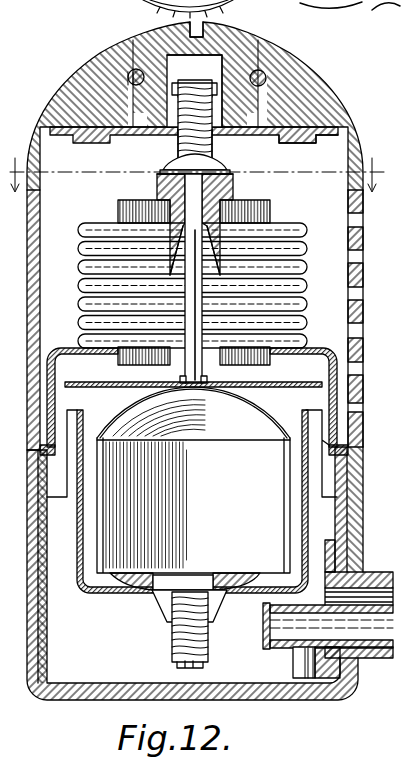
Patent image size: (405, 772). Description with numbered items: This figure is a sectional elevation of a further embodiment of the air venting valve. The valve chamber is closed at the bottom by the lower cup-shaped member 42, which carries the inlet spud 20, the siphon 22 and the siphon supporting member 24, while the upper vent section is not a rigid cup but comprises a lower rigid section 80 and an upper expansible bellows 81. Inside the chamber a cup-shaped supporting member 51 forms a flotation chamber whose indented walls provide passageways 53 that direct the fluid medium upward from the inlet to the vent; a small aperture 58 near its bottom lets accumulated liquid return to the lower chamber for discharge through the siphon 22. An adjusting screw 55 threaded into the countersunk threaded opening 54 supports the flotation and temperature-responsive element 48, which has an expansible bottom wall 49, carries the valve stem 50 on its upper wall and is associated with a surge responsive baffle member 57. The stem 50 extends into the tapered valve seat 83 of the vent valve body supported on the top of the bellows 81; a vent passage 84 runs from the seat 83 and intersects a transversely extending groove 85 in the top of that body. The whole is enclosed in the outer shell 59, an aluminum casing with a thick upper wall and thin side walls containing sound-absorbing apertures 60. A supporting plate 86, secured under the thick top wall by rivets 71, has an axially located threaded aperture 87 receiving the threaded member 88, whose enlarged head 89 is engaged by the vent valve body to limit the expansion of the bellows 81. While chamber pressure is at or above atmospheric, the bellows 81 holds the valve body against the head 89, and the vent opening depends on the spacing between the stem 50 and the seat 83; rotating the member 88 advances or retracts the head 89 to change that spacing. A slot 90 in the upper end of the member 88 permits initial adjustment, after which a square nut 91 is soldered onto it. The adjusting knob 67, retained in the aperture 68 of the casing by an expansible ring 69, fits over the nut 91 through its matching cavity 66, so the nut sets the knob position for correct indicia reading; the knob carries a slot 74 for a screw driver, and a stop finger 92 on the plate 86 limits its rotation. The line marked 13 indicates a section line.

The section line 13- 13 is at (196, 186).
The inlet spud 20 is at (374, 572).
The siphon 22 is at (381, 660).
The siphon supporting member 24 is at (296, 660).
The lower cup-shaped member 42 is at (353, 470).
The flotation and temperature-responsive element 48 is at (240, 400).
The expansible bottom wall 49 is at (152, 560).
The valve stem 50 is at (192, 349).
The cup-shaped supporting member 51 is at (293, 414).
The passageways 53 is at (328, 430).
The countersunk threaded opening 54 is at (162, 600).
The adjusting screw 55 is at (206, 650).
The surge responsive baffle member 57 is at (82, 386).
The small aperture 58 is at (78, 575).
The outer shell 59 is at (355, 137).
The sound-absorbing apertures 60 is at (363, 262).
The cavity 66 is at (212, 63).
The adjusting knob 67 is at (143, 33).
The aperture 68 is at (268, 83).
The expansible ring 69 is at (263, 93).
The rivets 71 is at (315, 142).
The slot 74 is at (196, 22).
The lower rigid section 80 is at (318, 349).
The bellows 81 is at (286, 223).
The tapered valve seat 83 is at (172, 277).
The vent passage 84 is at (160, 197).
The transversely extending groove 85 is at (220, 170).
The supporting plate 86 is at (328, 130).
The threaded aperture 87 is at (180, 138).
The threaded member 88 is at (182, 150).
The enlarged head 89 is at (166, 171).
The slot 90 is at (196, 82).
The nut 91 is at (215, 84).
The stop finger 92 is at (130, 115).